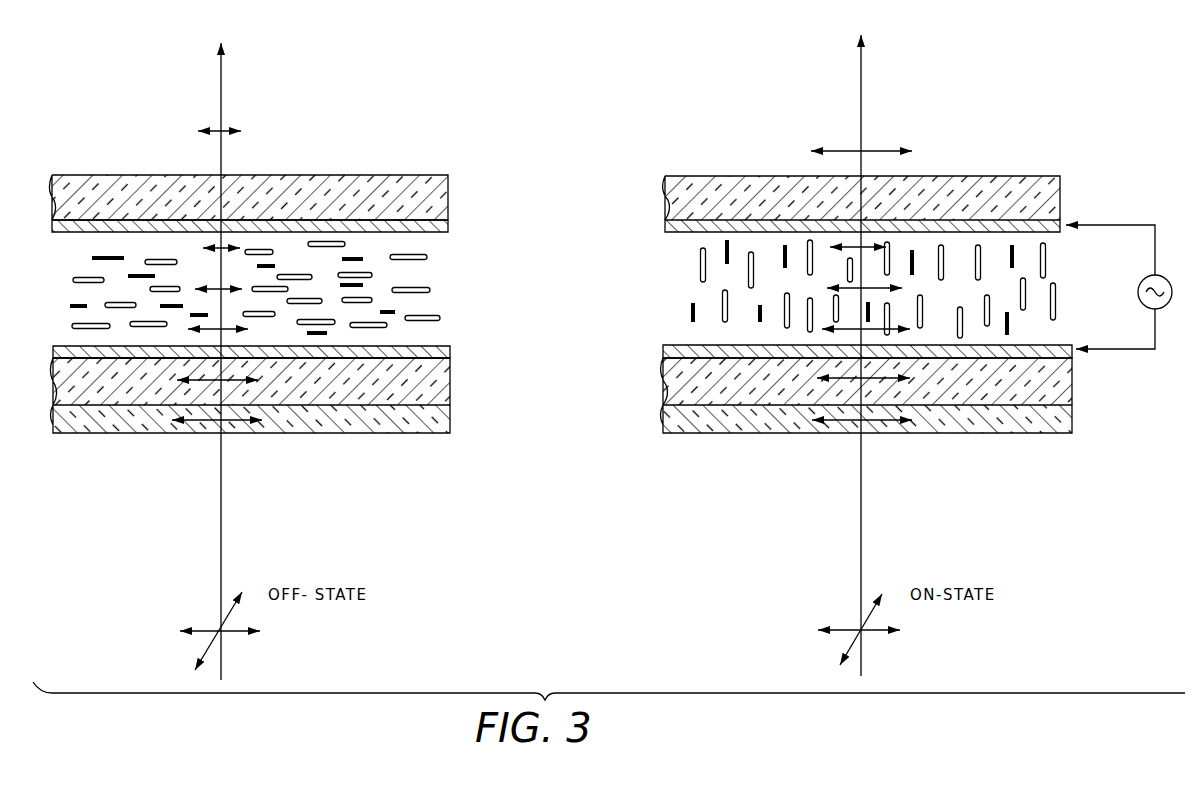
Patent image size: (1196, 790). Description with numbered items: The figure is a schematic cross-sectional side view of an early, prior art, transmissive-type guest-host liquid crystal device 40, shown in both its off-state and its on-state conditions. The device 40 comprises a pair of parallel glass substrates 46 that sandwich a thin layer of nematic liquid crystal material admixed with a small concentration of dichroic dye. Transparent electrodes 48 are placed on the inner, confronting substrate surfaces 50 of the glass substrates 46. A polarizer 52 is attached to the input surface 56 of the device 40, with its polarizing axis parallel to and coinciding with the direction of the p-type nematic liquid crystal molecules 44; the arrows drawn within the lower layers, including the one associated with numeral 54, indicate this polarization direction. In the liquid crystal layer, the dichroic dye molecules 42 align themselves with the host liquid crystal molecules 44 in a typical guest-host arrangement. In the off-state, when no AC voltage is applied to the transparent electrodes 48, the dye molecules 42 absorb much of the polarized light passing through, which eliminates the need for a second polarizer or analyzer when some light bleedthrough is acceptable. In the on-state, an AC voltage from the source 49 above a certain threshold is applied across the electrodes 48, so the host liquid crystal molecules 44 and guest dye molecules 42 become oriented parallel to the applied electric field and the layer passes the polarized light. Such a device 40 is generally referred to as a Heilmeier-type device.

The transmissive-type liquid crystal device 40 is at (366, 158).
The dye molecules 42 is at (395, 312).
The liquid crystal molecules 44 is at (430, 290).
The glass substrates 46 is at (452, 186).
The transparent electrodes 48 is at (432, 232).
The source 49 is at (1139, 292).
The substrate surfaces 50 is at (430, 232).
The polarizer 52 is at (452, 425).
The polarization direction arrow 54 is at (188, 433).
The input surface 56 is at (283, 406).